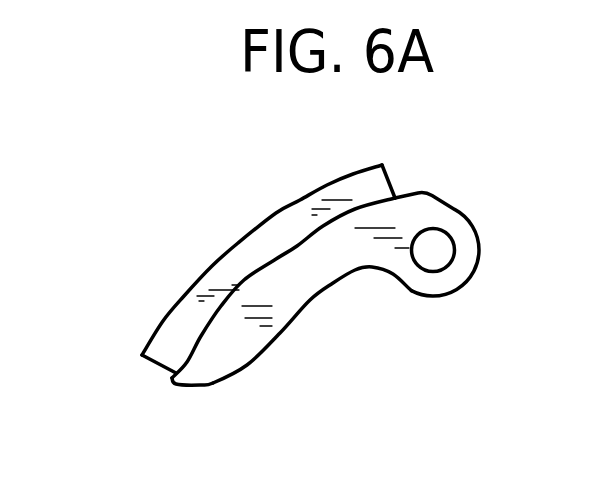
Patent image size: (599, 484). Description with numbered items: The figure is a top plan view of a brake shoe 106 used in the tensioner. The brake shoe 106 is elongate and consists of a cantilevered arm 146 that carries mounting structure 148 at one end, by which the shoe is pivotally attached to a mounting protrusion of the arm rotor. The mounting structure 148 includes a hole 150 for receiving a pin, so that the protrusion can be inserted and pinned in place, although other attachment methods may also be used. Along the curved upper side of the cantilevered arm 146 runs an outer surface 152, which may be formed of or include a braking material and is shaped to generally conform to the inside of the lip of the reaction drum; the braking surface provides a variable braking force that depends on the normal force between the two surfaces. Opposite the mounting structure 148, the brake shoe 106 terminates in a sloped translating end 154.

The brake shoe 106 is at (139, 392).
The cantilevered arm 146 is at (300, 313).
The mounting structure 148 is at (456, 290).
The hole 150 is at (443, 248).
The outer surface 152 is at (276, 211).
The translating end 154 is at (192, 386).